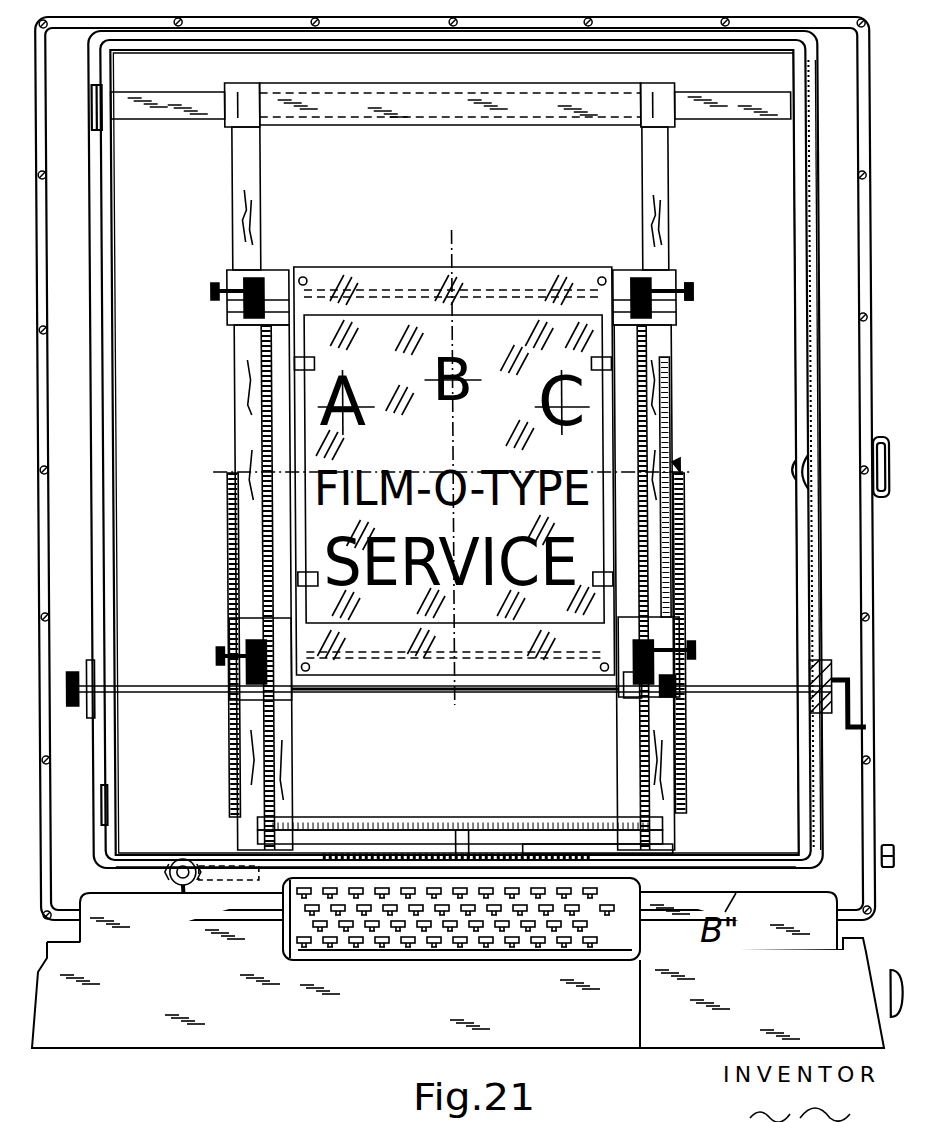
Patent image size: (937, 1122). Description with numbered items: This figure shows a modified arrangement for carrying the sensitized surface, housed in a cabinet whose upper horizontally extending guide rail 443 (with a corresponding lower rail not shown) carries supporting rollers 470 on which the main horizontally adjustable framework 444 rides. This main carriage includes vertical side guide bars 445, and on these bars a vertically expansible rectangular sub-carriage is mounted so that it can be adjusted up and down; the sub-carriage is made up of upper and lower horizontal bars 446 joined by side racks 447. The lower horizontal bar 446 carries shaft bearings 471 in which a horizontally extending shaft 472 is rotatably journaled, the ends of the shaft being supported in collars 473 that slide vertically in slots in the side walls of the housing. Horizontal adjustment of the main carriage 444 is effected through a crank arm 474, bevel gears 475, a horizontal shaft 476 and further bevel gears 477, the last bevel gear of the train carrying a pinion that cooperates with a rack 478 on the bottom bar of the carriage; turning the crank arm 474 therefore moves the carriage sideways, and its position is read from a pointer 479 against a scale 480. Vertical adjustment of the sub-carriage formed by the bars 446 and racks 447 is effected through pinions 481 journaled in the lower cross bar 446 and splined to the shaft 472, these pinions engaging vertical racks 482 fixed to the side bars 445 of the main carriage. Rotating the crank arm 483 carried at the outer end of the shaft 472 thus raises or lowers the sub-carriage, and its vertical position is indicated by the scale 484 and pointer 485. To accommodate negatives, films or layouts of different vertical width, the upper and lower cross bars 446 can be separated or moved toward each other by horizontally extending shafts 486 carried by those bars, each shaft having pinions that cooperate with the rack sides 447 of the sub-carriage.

The upper guide rail 443 is at (712, 98).
The main horizontally adjustable framework 444 is at (573, 117).
The vertical side guide bars 445 is at (258, 200).
The upper and lower horizontal bars 446 is at (290, 277).
The side racks 447 is at (266, 403).
The scale 484 is at (667, 444).
The pointer 485 is at (681, 469).
The vertical racks 482 is at (228, 525).
The horizontally extending shafts 486 is at (680, 284).
The horizontal shaft 472 is at (700, 681).
The collars 473 is at (90, 660).
The crank arm 483 is at (850, 735).
The shaft bearings 471 is at (648, 700).
The pinions 481 is at (683, 697).
The scale 480 is at (437, 806).
The pointer 479 is at (480, 836).
The rack 478 is at (566, 848).
The bevel gears 477 is at (450, 845).
The supporting rollers 470 is at (665, 858).
The bevel gears 475 is at (205, 842).
The crank arm 474 is at (176, 905).
The horizontal shaft 476 is at (281, 870).